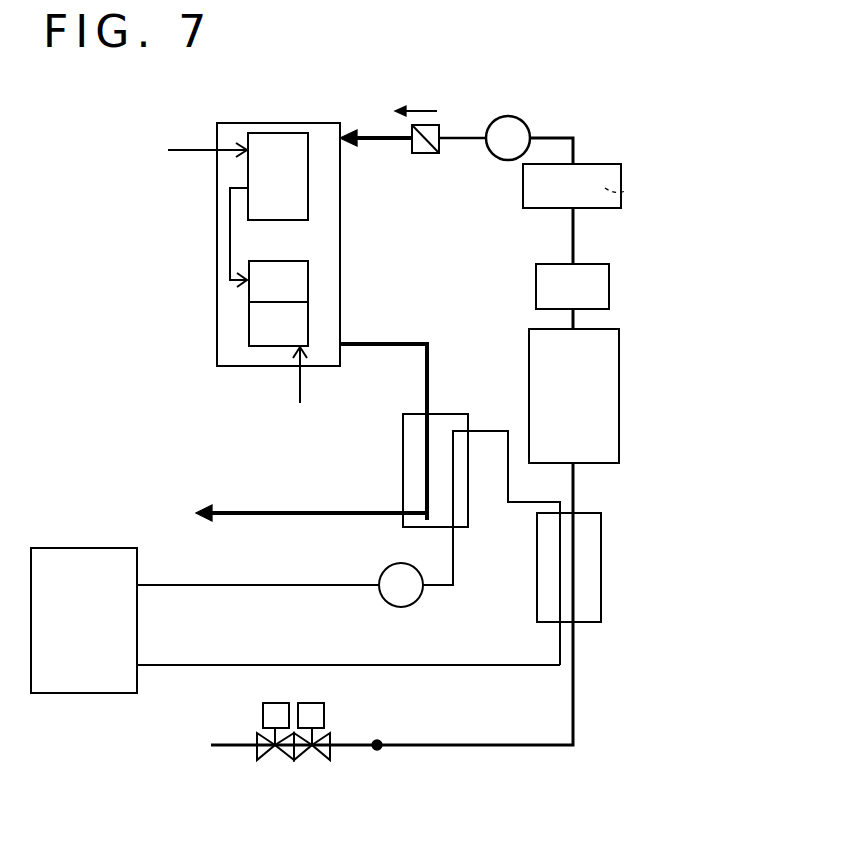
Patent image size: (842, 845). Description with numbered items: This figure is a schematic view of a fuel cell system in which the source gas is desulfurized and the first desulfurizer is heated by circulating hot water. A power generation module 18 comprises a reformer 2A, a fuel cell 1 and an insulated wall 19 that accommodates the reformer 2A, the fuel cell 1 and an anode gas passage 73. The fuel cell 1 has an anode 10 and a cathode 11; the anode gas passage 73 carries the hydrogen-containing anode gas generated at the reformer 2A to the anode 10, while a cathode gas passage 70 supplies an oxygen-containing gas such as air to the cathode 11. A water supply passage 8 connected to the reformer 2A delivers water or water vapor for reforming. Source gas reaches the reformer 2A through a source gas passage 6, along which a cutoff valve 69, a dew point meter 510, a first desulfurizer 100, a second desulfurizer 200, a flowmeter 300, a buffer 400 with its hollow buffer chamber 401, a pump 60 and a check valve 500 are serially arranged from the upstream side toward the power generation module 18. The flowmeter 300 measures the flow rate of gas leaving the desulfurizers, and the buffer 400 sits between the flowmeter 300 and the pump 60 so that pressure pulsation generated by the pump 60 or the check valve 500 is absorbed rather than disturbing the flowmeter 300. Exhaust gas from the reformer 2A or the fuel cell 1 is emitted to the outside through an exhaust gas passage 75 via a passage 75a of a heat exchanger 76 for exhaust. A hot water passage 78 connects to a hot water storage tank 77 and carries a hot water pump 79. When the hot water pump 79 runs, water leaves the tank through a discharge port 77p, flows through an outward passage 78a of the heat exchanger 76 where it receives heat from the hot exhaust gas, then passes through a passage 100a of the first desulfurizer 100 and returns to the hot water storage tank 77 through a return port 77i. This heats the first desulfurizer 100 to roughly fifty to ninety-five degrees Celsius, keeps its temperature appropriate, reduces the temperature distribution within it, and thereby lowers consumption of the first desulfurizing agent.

The fuel cell 1 is at (249, 318).
The reformer 2A is at (278, 176).
The source gas passage 6 is at (437, 748).
The water supply passage 8 is at (195, 150).
The anode 10 is at (278, 281).
The cathode 11 is at (278, 324).
The power generation module 18 is at (278, 244).
The insulated wall 19 is at (250, 123).
The pump 60 is at (515, 116).
The cutoff valve 69 is at (288, 760).
The cathode gas passage 70 is at (300, 383).
The anode gas passage 73 is at (232, 240).
The exhaust gas passage 75 is at (388, 343).
The passage of heat exchanger for exhaust 75a is at (426, 442).
The heat exchanger for exhaust 76 is at (452, 415).
The hot water storage tank 77 is at (88, 587).
The discharge port 77p is at (137, 586).
The return port 77i is at (137, 666).
The hot water passage 78 is at (295, 584).
The outward passage of heat exchanger 78a is at (455, 499).
The hot water pump 79 is at (382, 600).
The first desulfurizer 100 is at (601, 592).
The passage of first desulfurizer 100a is at (560, 560).
The second desulfurizer 200 is at (619, 434).
The flowmeter 300 is at (609, 285).
The buffer 400 is at (621, 166).
The buffer chamber 401 is at (627, 190).
The check valve 500 is at (440, 125).
The dew point meter 510 is at (377, 750).